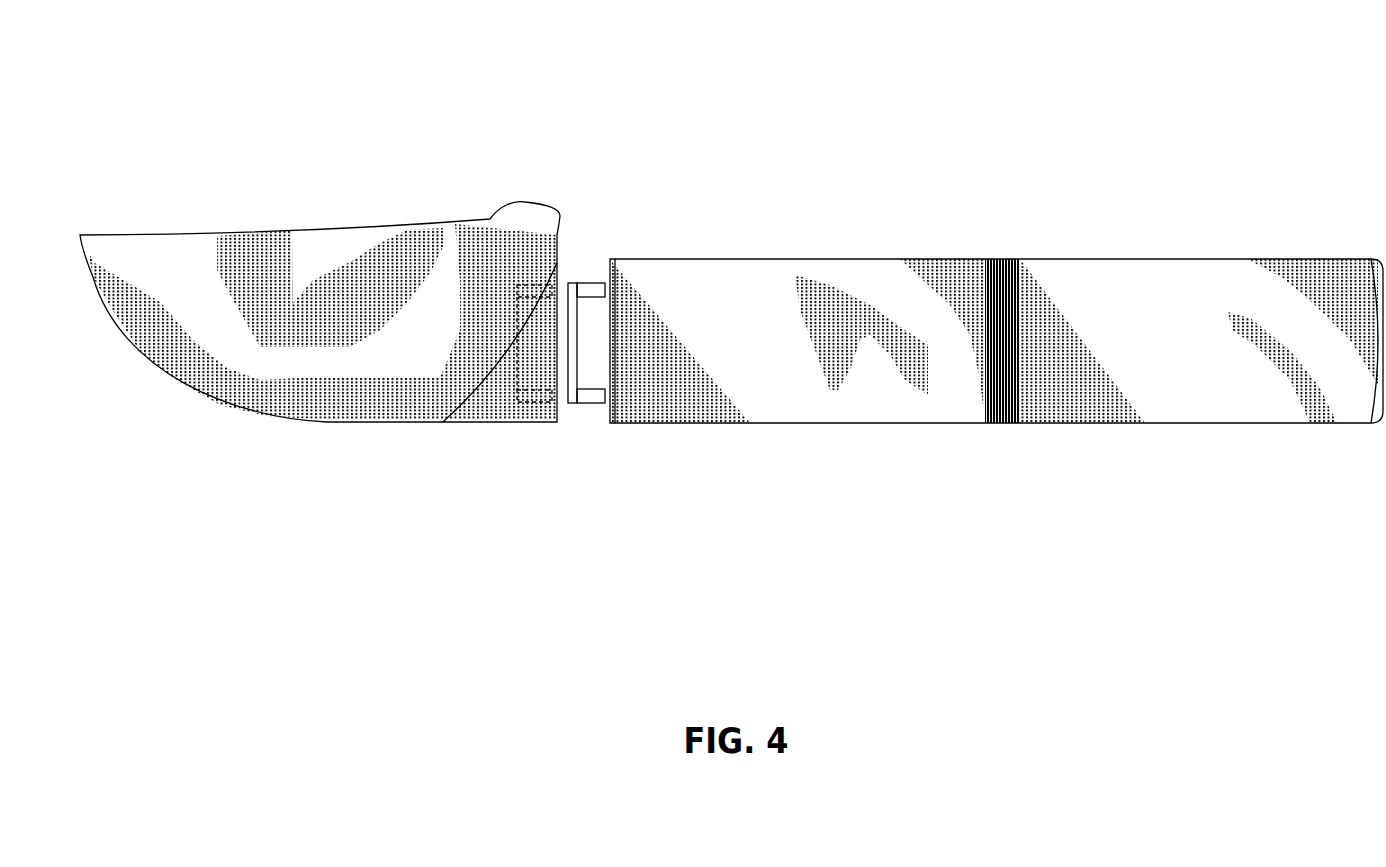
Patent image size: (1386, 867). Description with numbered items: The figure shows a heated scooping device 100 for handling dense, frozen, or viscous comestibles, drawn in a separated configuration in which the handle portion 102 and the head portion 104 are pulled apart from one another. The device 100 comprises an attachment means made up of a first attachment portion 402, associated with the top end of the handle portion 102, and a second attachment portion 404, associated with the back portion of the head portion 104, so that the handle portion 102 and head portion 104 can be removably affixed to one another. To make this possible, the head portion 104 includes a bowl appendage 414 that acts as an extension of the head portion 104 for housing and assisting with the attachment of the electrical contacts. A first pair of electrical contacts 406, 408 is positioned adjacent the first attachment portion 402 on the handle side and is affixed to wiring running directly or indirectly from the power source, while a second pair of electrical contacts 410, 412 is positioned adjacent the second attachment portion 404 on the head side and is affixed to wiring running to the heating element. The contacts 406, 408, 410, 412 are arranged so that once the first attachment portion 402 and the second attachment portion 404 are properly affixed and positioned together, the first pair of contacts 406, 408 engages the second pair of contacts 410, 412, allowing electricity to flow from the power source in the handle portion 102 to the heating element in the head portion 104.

The heated scooping device 100 is at (1183, 124).
The handle portion 102 is at (1182, 423).
The head portion 104 is at (280, 420).
The first attachment portion 402 is at (645, 334).
The second attachment portion 404 is at (535, 347).
The first electrical contact of first pair 406 is at (591, 290).
The second electrical contact of first pair 408 is at (588, 402).
The first electrical contact of second pair 410 is at (535, 292).
The second electrical contact of second pair 412 is at (535, 400).
The bowl appendage 414 is at (503, 410).